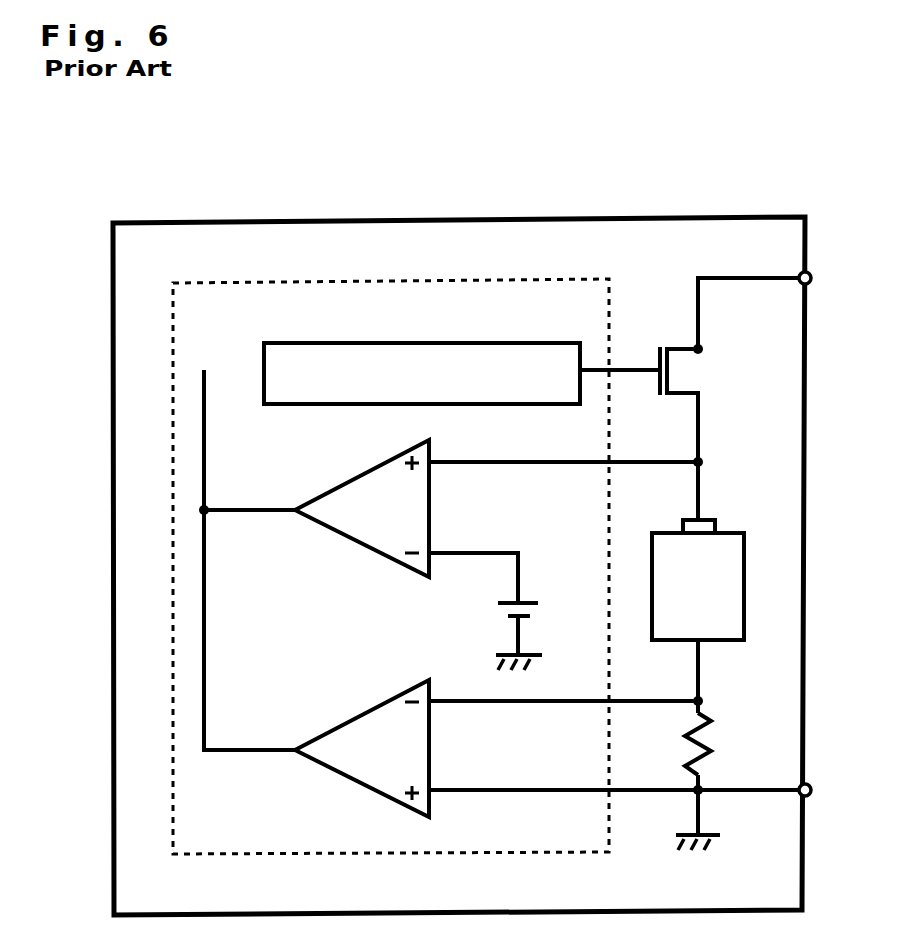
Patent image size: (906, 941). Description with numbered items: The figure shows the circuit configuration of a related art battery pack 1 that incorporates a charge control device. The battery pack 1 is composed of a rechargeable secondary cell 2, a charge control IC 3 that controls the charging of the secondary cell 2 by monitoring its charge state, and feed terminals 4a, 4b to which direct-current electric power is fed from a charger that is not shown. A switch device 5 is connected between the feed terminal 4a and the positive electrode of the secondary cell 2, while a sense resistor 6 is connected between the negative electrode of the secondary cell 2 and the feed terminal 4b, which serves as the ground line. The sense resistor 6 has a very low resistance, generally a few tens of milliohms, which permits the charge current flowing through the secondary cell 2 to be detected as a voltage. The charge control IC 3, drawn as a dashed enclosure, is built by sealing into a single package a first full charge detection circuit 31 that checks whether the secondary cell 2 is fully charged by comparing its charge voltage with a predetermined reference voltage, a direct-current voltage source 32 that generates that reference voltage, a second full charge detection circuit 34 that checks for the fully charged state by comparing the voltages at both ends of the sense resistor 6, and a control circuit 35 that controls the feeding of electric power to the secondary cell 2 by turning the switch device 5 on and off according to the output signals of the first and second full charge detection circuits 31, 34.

The battery pack 1 is at (458, 221).
The secondary cell 2 is at (744, 588).
The charge control IC 3 is at (394, 284).
The feed terminal 4a is at (812, 278).
The feed terminal 4b is at (812, 790).
The switch device 5 is at (667, 370).
The sense resistor 6 is at (712, 744).
The first full charge detection circuit 31 is at (360, 470).
The direct-current voltage source 32 is at (539, 609).
The second full charge detection circuit 34 is at (360, 711).
The control circuit 35 is at (366, 343).